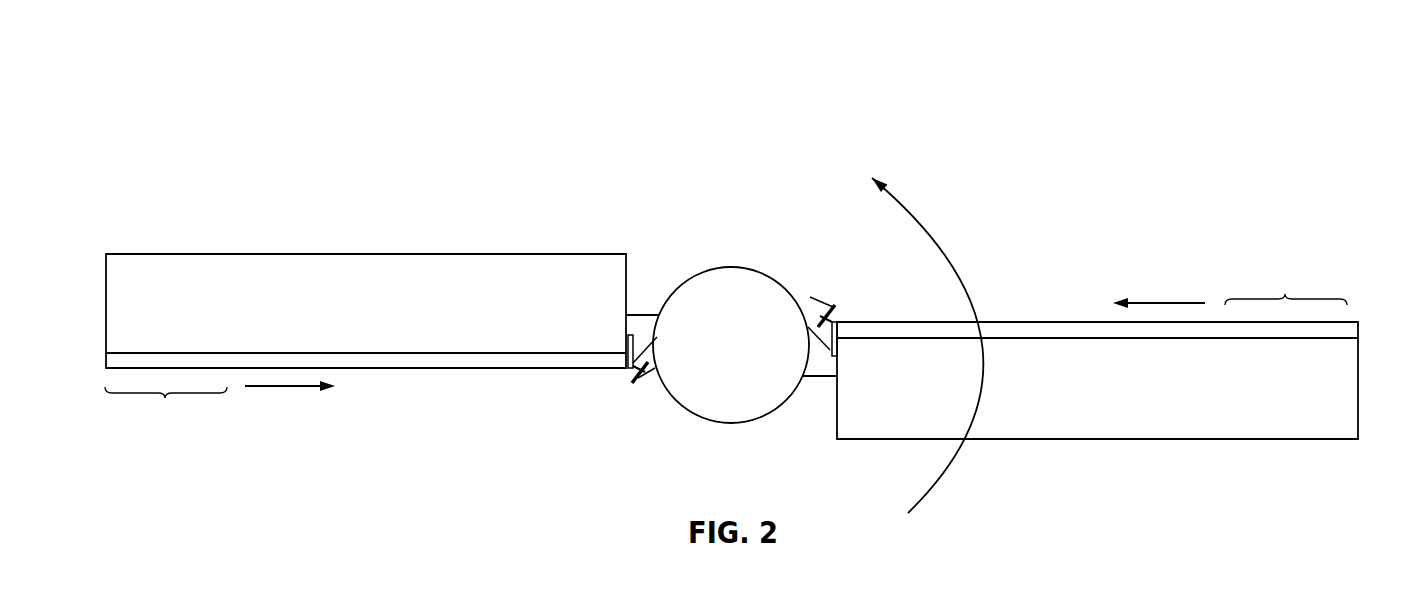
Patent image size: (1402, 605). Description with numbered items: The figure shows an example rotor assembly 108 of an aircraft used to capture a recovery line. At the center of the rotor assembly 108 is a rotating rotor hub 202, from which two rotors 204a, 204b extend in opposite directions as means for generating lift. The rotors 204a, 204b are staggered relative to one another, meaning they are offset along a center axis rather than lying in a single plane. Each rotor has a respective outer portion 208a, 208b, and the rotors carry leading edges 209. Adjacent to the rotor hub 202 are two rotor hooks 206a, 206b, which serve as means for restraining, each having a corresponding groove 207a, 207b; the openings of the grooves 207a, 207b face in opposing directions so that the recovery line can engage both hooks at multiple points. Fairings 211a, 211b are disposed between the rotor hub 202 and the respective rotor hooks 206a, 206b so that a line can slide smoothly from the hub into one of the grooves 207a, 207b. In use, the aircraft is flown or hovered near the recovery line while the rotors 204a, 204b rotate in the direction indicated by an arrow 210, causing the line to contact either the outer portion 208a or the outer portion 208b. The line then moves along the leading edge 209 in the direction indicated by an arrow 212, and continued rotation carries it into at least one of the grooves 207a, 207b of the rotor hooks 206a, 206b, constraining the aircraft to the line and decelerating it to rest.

The rotor assembly 108 is at (1148, 65).
The rotor hub 202 is at (722, 292).
The rotor 204a is at (122, 273).
The rotor 204b is at (1312, 410).
The rotor hook 206a is at (637, 388).
The rotor hook 206b is at (833, 303).
The groove 207a is at (630, 385).
The groove 207b is at (838, 312).
The outer portion 208a is at (165, 398).
The outer portion 208b is at (1285, 294).
The leading edge 209 is at (400, 368).
The arrow 210 is at (925, 498).
The fairing 211a is at (652, 385).
The fairing 211b is at (833, 303).
The arrow 212 is at (277, 387).